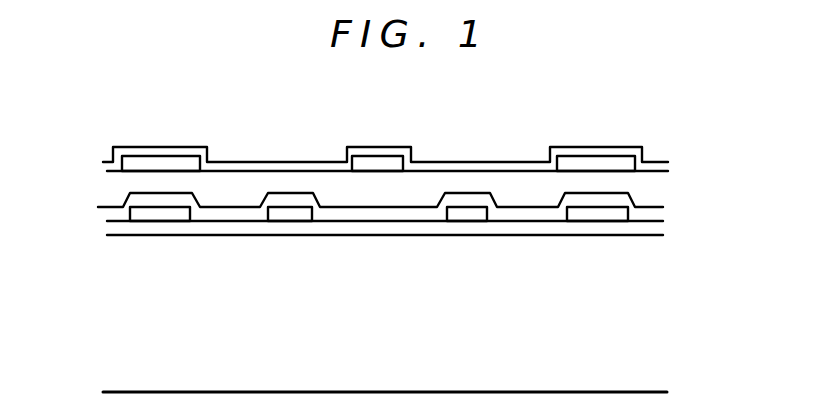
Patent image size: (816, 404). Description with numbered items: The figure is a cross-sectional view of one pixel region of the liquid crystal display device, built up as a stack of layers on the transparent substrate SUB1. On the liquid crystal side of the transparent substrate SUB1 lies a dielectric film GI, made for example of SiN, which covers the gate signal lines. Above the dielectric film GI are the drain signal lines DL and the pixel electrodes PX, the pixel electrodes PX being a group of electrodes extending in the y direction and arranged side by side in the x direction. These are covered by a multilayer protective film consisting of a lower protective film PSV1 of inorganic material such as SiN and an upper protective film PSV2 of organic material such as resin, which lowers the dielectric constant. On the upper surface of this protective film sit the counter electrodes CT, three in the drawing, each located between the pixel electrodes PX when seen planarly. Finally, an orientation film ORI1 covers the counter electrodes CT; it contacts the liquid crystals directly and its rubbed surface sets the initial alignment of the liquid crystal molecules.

The counter electrode CT is at (175, 162).
The pixel electrode PX is at (292, 208).
The orientation film ORI1 is at (520, 160).
The protective film PSV2 is at (112, 191).
The drain signal line DL is at (138, 214).
The protective film PSV1 is at (657, 207).
The dielectric film GI is at (655, 228).
The transparent substrate SUB1 is at (143, 322).